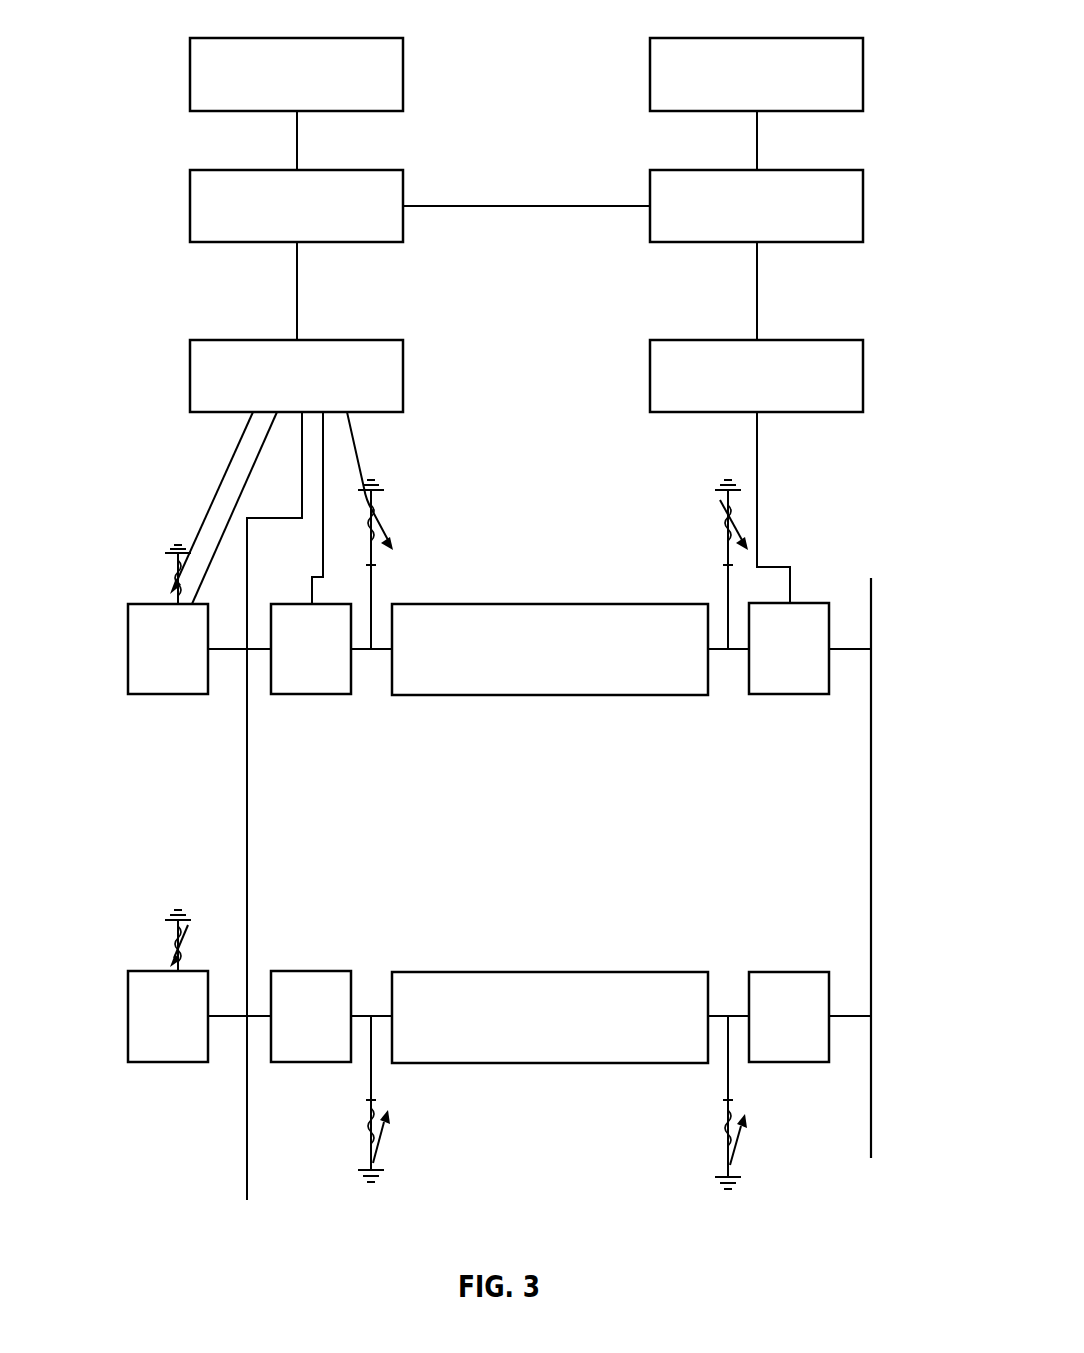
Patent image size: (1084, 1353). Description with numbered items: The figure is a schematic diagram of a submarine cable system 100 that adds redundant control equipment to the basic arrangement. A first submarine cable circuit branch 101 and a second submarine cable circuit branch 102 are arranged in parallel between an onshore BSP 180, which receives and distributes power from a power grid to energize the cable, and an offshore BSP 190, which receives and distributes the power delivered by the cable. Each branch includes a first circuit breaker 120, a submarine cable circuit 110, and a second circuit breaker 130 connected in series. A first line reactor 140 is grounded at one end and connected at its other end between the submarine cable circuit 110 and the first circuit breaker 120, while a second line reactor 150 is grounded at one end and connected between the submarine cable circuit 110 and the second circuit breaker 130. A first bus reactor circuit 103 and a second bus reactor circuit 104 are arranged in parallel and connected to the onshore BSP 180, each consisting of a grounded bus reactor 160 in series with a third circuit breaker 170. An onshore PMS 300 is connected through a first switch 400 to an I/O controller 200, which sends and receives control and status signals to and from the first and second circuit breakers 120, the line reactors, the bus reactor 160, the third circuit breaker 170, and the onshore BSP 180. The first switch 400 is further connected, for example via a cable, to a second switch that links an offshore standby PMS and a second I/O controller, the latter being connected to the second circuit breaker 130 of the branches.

The submarine cable system 100 is at (872, 737).
The first submarine cable circuit branch 101 is at (858, 649).
The second submarine cable circuit branch 102 is at (858, 1016).
The first bus reactor circuit 103 is at (135, 587).
The second bus reactor circuit 104 is at (127, 960).
The submarine cable circuit 110 is at (640, 604).
The first circuit breaker 120 is at (327, 604).
The second circuit breaker 130 is at (797, 603).
The first line reactor 140 is at (378, 520).
The second line reactor 150 is at (736, 522).
The bus reactor 160 is at (172, 563).
The third circuit breaker 170 is at (168, 694).
The onshore Bulk Supply Point (BSP) 180 is at (248, 842).
The offshore Bulk Supply Point (BSP) 190 is at (870, 823).
The I/O controller 200 is at (296, 357).
The Power Management System (PMS) 300 is at (296, 57).
The first switch 400 is at (296, 188).